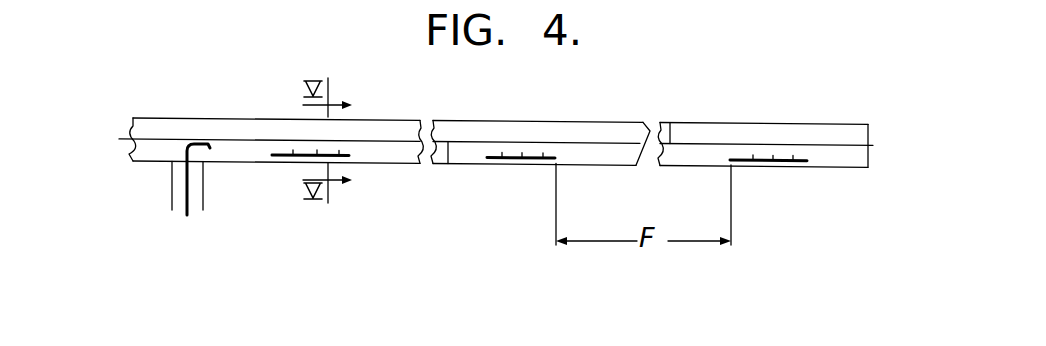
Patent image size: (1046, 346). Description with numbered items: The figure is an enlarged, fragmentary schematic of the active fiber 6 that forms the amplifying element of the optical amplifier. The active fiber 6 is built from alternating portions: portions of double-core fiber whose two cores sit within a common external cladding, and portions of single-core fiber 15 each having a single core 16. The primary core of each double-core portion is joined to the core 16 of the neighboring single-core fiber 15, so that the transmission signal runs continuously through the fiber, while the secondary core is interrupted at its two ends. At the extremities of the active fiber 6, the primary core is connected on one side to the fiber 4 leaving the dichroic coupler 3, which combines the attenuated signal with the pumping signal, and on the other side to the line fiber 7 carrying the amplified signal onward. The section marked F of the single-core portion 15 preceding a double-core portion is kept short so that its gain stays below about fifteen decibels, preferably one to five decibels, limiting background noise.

The dichroic coupler 3 is at (190, 115).
The outgoing fiber 4 is at (217, 163).
The active fiber 6 is at (457, 114).
The line fiber 7 is at (810, 124).
The single-core fiber portion 15 is at (470, 165).
The core 16 is at (447, 150).